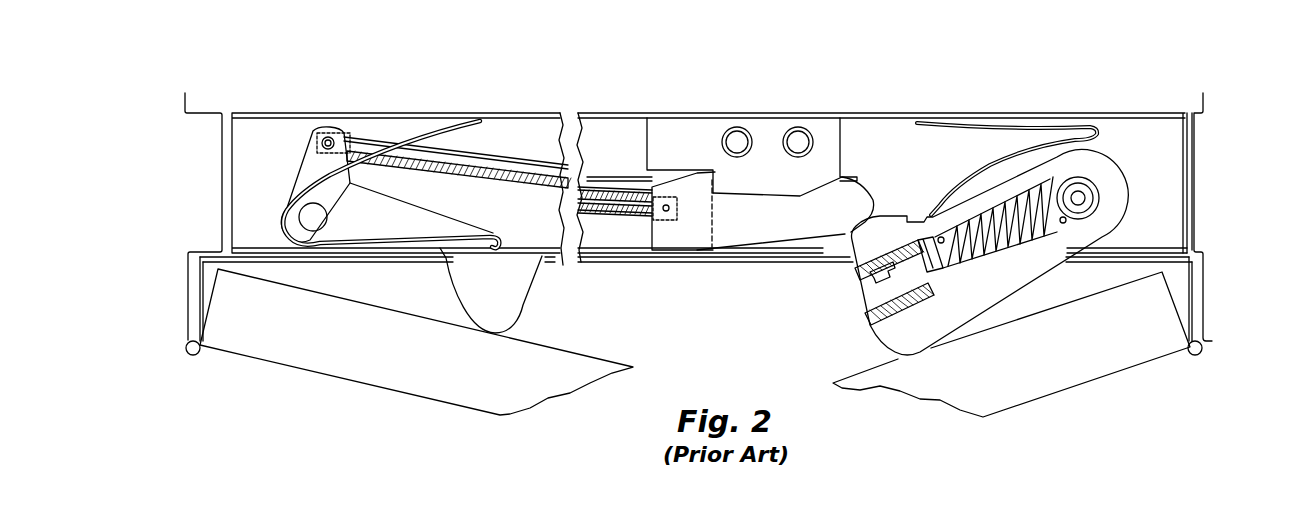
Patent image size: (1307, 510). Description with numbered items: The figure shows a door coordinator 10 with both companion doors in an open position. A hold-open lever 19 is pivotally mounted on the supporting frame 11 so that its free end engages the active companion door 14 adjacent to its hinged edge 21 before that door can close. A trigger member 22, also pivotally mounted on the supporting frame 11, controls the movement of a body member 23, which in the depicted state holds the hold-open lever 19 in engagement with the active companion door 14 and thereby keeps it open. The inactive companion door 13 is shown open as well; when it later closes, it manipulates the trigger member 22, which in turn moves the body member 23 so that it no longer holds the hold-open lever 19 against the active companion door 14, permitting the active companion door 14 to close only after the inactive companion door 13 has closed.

The door coordinator 10 is at (1228, 160).
The supporting frame 11 is at (1128, 113).
The inactive companion door 13 is at (397, 364).
The active companion door 14 is at (1034, 378).
The hold-open lever 19 is at (972, 315).
The hinged edge 21 is at (1172, 284).
The trigger member 22 is at (510, 295).
The body member 23 is at (770, 237).